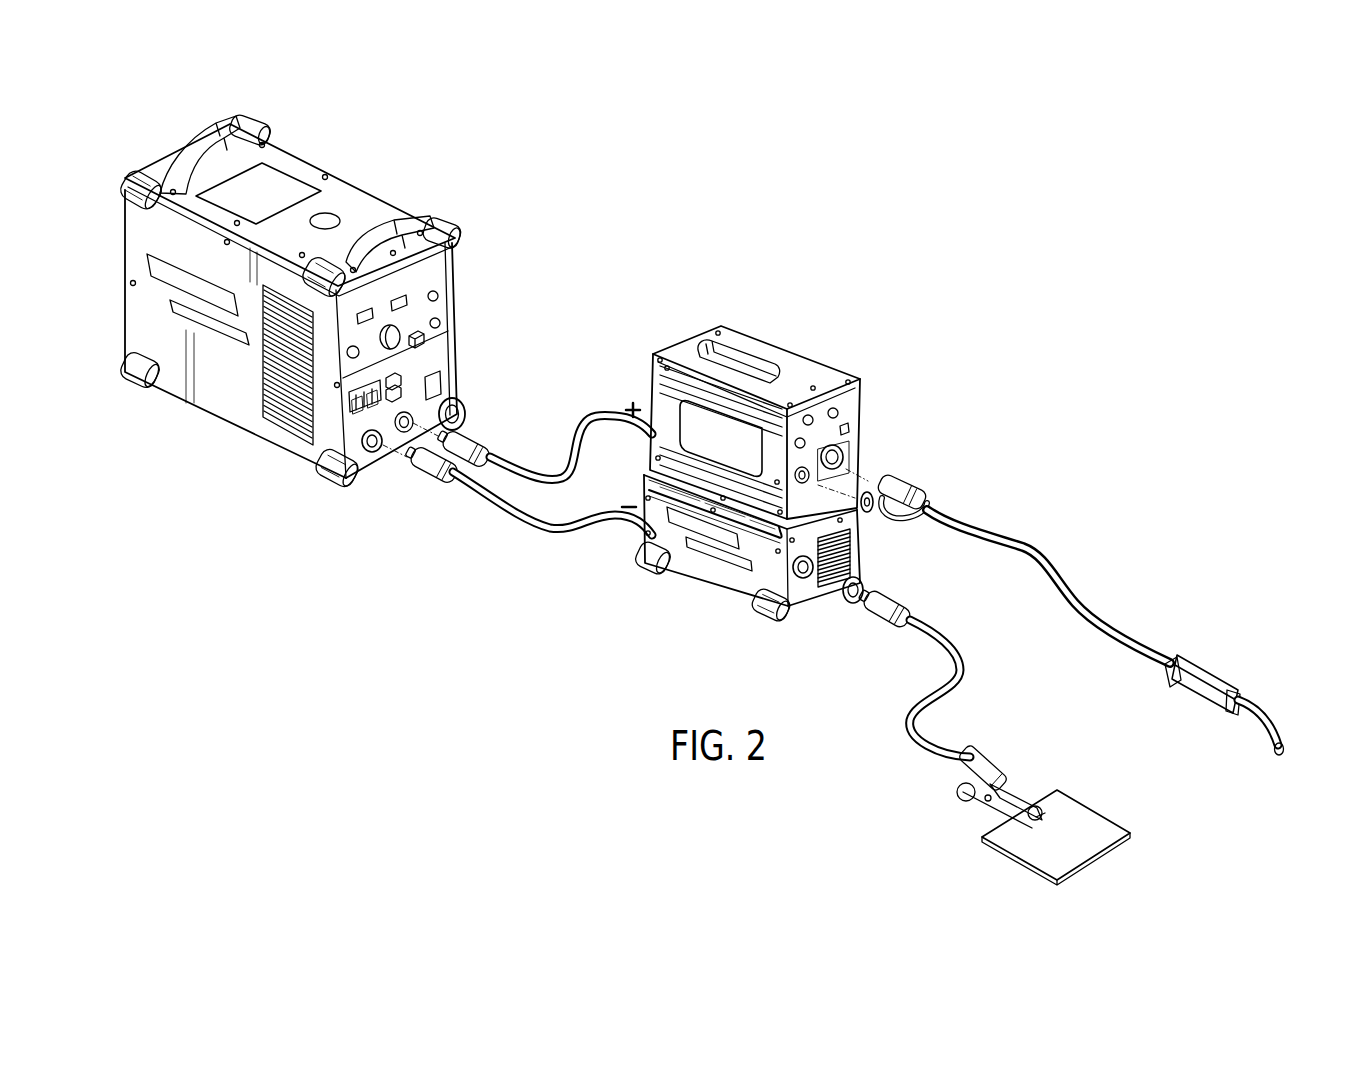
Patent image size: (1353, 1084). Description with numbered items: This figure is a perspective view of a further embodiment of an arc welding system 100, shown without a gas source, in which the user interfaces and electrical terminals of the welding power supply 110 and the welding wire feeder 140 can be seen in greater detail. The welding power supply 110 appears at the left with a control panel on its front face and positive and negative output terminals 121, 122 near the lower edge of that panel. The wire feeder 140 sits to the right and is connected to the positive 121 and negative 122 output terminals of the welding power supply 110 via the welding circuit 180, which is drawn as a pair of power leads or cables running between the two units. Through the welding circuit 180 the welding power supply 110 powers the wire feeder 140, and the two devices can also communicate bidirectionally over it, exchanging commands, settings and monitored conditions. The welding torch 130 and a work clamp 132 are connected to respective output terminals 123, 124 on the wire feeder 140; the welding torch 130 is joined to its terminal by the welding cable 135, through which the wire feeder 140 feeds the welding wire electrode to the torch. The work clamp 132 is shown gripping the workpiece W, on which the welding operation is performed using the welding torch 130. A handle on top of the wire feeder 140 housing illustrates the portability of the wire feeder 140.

The arc welding system 100 is at (1068, 283).
The welding power supply 110 is at (331, 187).
The positive output terminal 121 is at (440, 404).
The negative output terminal 122 is at (372, 453).
The output terminal 123 is at (838, 449).
The output terminal 124 is at (803, 578).
The welding torch 130 is at (1220, 700).
The work clamp 132 is at (990, 763).
The welding cable 135 is at (1110, 627).
The welding wire feeder 140 is at (778, 348).
The welding circuit 180 is at (491, 508).
The workpiece W is at (1067, 811).